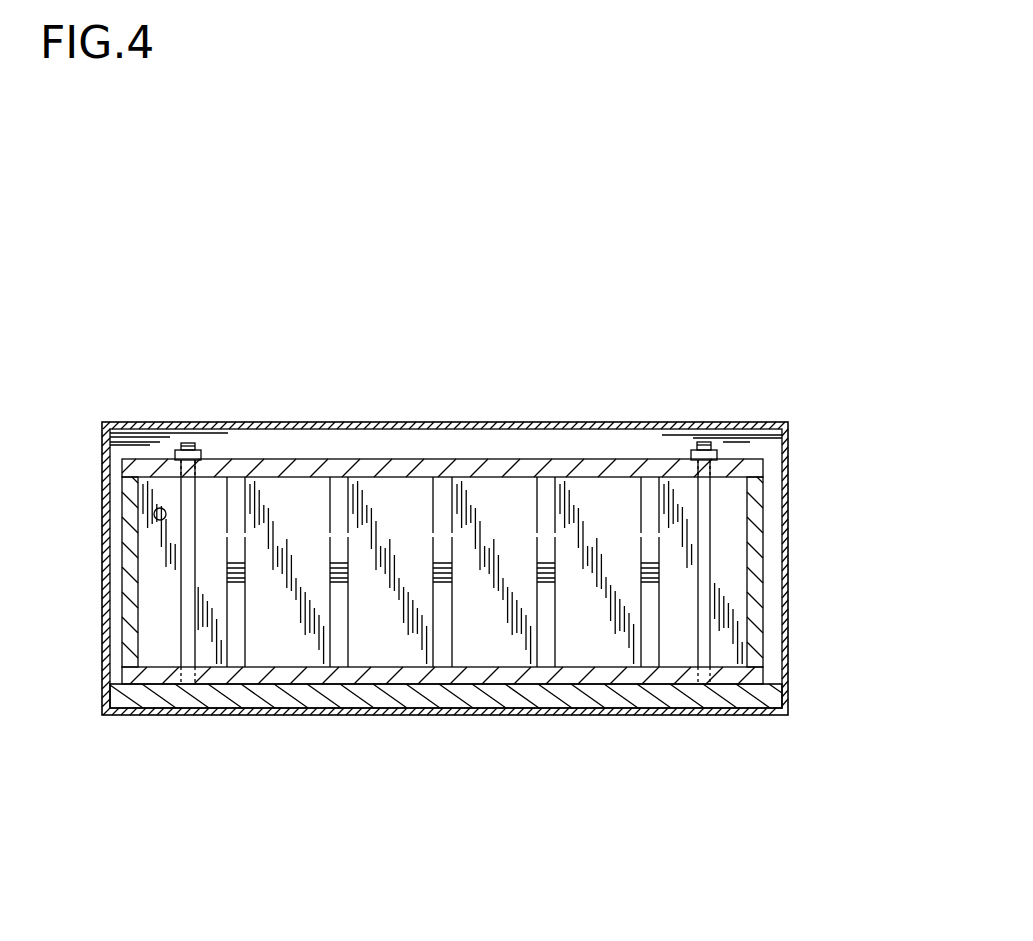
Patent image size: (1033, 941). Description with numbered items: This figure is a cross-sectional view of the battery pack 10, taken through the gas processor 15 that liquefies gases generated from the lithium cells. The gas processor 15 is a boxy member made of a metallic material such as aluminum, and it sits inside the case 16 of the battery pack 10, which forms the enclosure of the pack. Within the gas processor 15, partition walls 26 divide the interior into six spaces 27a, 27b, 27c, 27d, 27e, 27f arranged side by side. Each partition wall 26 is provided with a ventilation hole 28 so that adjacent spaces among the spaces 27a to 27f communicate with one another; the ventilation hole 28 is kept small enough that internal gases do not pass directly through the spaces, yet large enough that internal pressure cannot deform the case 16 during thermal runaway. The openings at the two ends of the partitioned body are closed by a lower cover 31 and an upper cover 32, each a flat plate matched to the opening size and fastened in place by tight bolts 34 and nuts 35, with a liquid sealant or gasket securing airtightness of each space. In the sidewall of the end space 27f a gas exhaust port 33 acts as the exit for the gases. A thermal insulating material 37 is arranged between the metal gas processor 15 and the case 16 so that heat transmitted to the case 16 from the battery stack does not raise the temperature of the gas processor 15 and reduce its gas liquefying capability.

The battery pack 10 is at (299, 744).
The gas processor 15 is at (416, 446).
The case 16 is at (788, 512).
The partition wall 26 is at (552, 633).
The space 27a is at (673, 647).
The space 27b is at (603, 653).
The space 27c is at (518, 658).
The space 27d is at (395, 645).
The space 27e is at (270, 645).
The space 27f is at (165, 648).
The ventilation hole 28 is at (533, 567).
The lower cover 31 is at (738, 677).
The upper cover 32 is at (628, 465).
The gas exhaust port 33 is at (158, 508).
The tight bolt 34 is at (705, 628).
The nut 35 is at (717, 453).
The thermal insulating material 37 is at (735, 698).